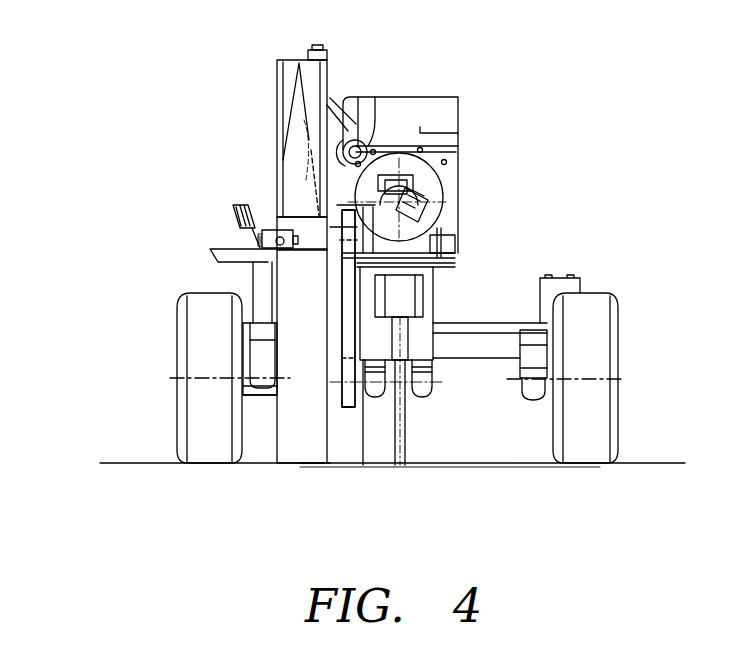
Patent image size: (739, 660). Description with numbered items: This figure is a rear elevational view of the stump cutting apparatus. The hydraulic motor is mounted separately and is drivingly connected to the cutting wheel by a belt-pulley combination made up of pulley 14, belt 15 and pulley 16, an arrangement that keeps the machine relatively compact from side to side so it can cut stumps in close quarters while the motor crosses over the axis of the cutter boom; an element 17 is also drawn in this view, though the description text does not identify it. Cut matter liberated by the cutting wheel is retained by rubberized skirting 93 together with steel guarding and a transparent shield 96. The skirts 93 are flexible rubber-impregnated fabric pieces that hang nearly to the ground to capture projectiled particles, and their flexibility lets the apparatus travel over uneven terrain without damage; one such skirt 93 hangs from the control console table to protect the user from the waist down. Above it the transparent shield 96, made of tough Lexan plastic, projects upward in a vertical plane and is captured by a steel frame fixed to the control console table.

The transparent shield 96 is at (272, 88).
The pulley 14 is at (338, 213).
The belt 15 is at (330, 281).
The pulley 16 is at (337, 404).
The blade shaft 17 is at (363, 440).
The rubberized skirting 93 is at (274, 427).